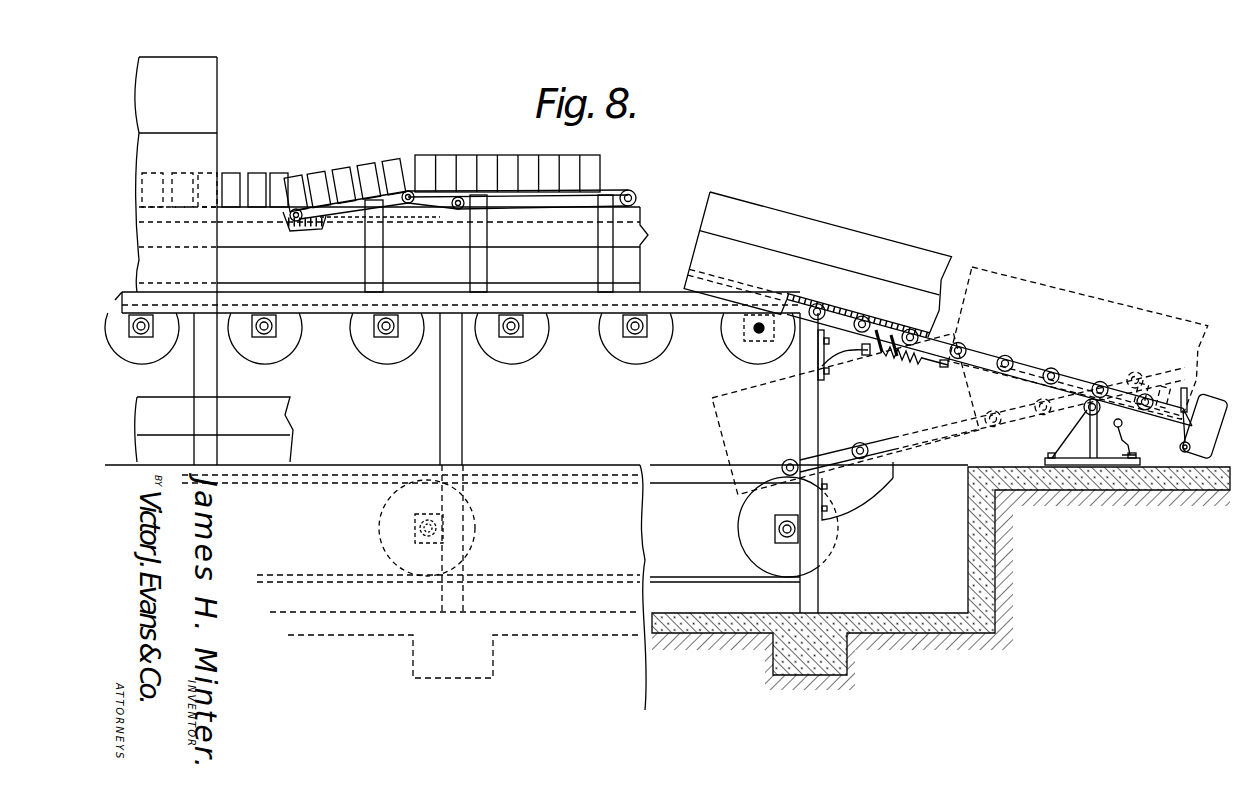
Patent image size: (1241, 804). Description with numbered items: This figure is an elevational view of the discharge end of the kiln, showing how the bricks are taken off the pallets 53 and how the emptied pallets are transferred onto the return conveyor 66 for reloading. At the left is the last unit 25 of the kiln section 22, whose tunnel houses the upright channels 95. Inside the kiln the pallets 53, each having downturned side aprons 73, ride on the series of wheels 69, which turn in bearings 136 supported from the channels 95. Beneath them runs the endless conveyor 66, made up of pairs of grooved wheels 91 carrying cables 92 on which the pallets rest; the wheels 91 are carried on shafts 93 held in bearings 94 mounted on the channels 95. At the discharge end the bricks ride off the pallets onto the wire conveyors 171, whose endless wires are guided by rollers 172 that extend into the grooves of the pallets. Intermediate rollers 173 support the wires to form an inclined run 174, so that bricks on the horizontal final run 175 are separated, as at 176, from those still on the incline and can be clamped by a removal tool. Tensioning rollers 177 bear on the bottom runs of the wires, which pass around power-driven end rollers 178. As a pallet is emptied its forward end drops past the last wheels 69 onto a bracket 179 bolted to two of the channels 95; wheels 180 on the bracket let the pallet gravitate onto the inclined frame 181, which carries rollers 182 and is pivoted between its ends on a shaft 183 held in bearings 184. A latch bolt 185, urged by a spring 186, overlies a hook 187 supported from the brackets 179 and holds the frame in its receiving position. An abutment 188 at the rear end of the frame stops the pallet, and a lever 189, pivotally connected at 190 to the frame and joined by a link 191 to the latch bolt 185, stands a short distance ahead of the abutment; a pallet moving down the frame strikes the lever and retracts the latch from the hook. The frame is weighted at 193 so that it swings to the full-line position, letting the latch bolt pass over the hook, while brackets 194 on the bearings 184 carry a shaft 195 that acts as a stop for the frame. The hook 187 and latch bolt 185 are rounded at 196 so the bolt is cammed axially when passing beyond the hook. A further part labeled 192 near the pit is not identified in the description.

The section 22 is at (225, 104).
The unit 25 is at (207, 153).
The pallet 53 is at (228, 263).
The endless conveyor 66 is at (685, 470).
The wheels 69 is at (296, 350).
The aprons 73 is at (345, 314).
The grooved wheels 91 is at (472, 515).
The cables 92 is at (683, 473).
The shafts 93 is at (420, 524).
The bearings 94 is at (418, 532).
The channels 95 is at (456, 422).
The bearings 136 is at (292, 332).
The wire conveyors 171 is at (336, 178).
The rollers 172 is at (285, 226).
The rollers 173 is at (412, 190).
The inclined run 174 is at (356, 162).
The horizontal final run 175 is at (613, 186).
The separation point 176 is at (409, 150).
The tensioning rollers 177 is at (455, 211).
The end rollers 178 is at (637, 196).
The bracket 179 is at (838, 362).
The wheels 180 is at (818, 306).
The inclined frame 181 is at (992, 373).
The rollers 182 is at (960, 344).
The shaft 183 is at (1088, 412).
The bearings 184 is at (1086, 432).
The latch bolt 185 is at (908, 362).
The spring 186 is at (930, 364).
The hook 187 is at (866, 357).
The abutment 188 is at (1212, 336).
The lever 189 is at (1184, 388).
The pivot connection 190 is at (1180, 470).
The link 191 is at (1181, 449).
The bracket 192 is at (850, 490).
The weight 193 is at (1210, 462).
The brackets 194 is at (1124, 437).
The shaft 195 is at (1118, 419).
The rounded portions 196 is at (880, 330).